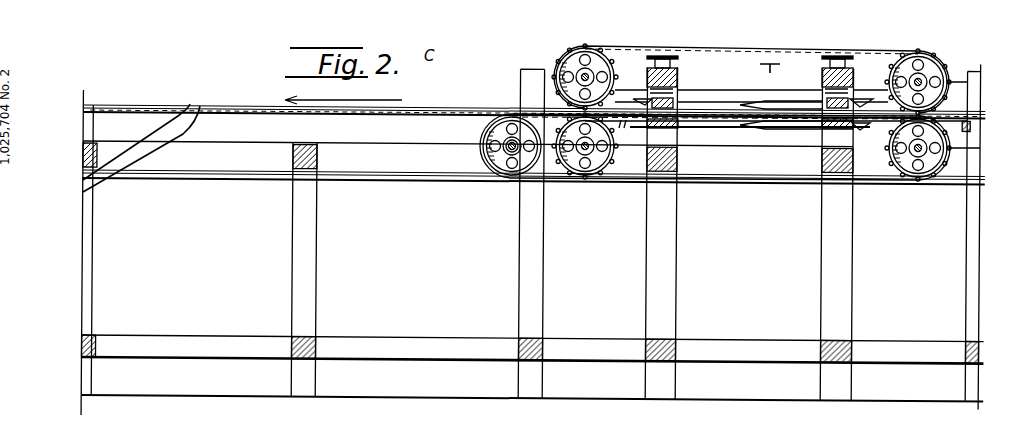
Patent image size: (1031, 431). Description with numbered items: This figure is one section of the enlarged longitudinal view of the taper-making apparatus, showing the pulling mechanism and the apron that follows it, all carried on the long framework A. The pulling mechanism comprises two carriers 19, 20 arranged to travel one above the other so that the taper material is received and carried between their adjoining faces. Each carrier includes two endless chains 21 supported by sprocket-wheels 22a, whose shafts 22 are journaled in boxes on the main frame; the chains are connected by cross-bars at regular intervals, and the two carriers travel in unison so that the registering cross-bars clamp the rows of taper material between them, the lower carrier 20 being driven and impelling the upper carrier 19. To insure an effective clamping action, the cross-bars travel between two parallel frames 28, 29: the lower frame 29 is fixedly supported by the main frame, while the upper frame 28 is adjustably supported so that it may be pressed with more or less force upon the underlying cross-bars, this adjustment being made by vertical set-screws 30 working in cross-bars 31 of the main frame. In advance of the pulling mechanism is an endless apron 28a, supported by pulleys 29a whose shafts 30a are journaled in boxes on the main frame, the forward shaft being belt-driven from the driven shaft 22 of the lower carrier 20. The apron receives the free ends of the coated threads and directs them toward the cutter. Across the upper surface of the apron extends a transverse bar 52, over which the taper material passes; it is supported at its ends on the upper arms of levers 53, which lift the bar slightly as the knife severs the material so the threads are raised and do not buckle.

The framework A is at (315, 241).
The upper carrier 19 is at (723, 47).
The lower carrier 20 is at (724, 118).
The endless chains 21 is at (736, 133).
The sprocket-wheel shafts 22 is at (613, 67).
The sprocket-wheels 22a is at (997, 172).
The upper frame 28 is at (737, 108).
The endless apron 28a is at (408, 178).
The lower frame 29 is at (803, 124).
The pulleys 29a is at (501, 172).
The vertical set-screws 30 is at (679, 61).
The pulley shafts 30a is at (505, 148).
The cross-bars of the main frame 31 is at (679, 78).
The transverse bar 52 is at (200, 106).
The levers 53 is at (157, 154).